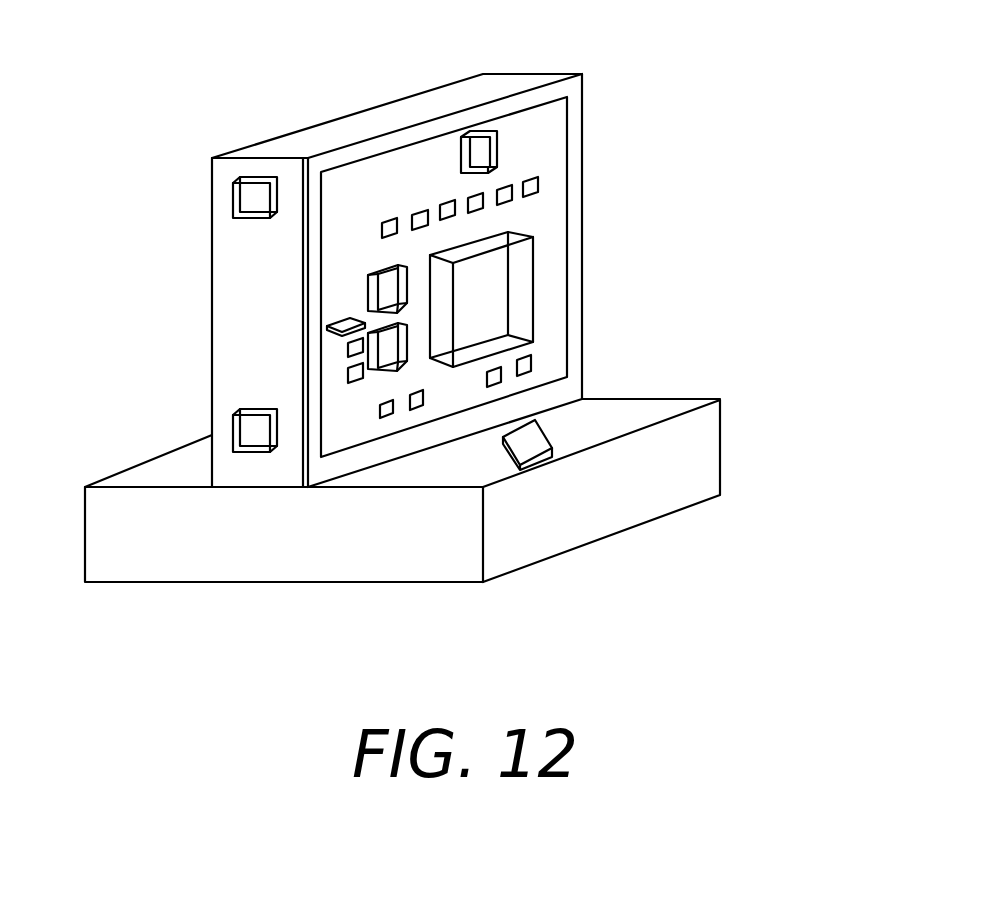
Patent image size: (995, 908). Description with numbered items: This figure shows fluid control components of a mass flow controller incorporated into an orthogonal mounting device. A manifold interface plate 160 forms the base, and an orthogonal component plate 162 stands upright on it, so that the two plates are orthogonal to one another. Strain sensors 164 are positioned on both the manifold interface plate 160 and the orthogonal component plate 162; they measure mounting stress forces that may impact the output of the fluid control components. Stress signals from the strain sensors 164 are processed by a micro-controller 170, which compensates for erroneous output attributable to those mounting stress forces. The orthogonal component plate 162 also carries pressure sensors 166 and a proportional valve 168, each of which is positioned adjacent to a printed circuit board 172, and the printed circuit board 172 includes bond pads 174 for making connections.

The manifold interface plate 160 is at (703, 445).
The orthogonal component plate 162 is at (582, 132).
The strain sensors 164 is at (248, 197).
The pressure sensors 166 is at (372, 332).
The proportional valve 168 is at (520, 296).
The micro-controller 170 is at (492, 131).
The printed circuit board 172 is at (427, 160).
The bond pads 174 is at (490, 387).